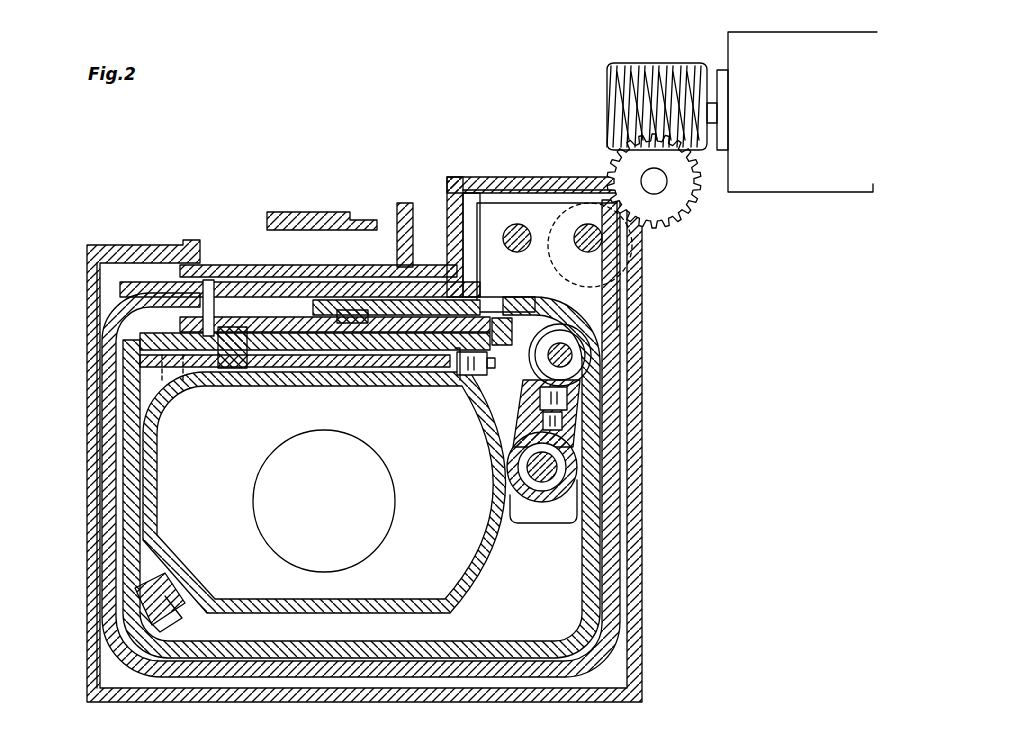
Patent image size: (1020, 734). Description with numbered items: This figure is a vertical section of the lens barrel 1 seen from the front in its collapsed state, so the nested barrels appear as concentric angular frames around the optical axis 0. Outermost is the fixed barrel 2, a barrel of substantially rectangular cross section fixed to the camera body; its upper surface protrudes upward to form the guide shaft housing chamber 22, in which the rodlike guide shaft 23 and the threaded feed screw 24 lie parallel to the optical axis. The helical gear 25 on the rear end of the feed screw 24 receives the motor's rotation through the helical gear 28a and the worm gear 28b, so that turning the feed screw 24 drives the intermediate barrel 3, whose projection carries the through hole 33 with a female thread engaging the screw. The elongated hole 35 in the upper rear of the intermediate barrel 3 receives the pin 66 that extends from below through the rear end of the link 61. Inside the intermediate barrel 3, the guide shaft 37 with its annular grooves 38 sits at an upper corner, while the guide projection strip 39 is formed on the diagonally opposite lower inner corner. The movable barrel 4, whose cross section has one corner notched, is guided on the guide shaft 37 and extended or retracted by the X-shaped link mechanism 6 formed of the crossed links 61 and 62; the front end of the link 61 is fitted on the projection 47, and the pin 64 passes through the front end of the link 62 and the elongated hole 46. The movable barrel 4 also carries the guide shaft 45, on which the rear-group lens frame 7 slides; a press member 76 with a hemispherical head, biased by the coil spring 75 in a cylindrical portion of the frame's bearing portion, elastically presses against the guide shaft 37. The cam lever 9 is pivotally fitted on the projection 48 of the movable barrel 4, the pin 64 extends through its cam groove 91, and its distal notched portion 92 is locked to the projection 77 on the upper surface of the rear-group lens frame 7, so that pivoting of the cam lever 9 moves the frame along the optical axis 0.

The optical axis 0 is at (328, 498).
The lens barrel 1 is at (679, 331).
The fixed barrel 2 is at (641, 558).
The intermediate barrel 3 is at (619, 588).
The movable barrel 4 is at (600, 618).
The X-shaped link mechanism 6 is at (345, 325).
The rear-group lens frame 7 is at (507, 540).
The cam lever 9 is at (395, 362).
The guide shaft housing chamber 22 is at (410, 228).
The guide shaft 23 is at (505, 228).
The feed screw 24 is at (600, 248).
The helical gear 25 is at (530, 182).
The helical gear 28a is at (688, 214).
The worm gear 28b is at (655, 65).
The through hole 33 is at (455, 262).
The elongated hole 35 is at (256, 300).
The guide shaft 37 is at (592, 350).
The grooves 38 is at (592, 365).
The guide projection strip 39 is at (130, 616).
The guide shaft 45 is at (570, 462).
The elongated hole 46 is at (341, 342).
The projection 47 is at (500, 318).
The projection 48 is at (90, 392).
The link 61 is at (323, 303).
The link 62 is at (380, 312).
The pin 64 is at (232, 372).
The pin 66 is at (207, 322).
The coil spring 75 is at (580, 415).
The press member 76 is at (585, 388).
The projection 77 is at (478, 388).
The cam groove 91 is at (301, 366).
The notched portion 92 is at (447, 372).